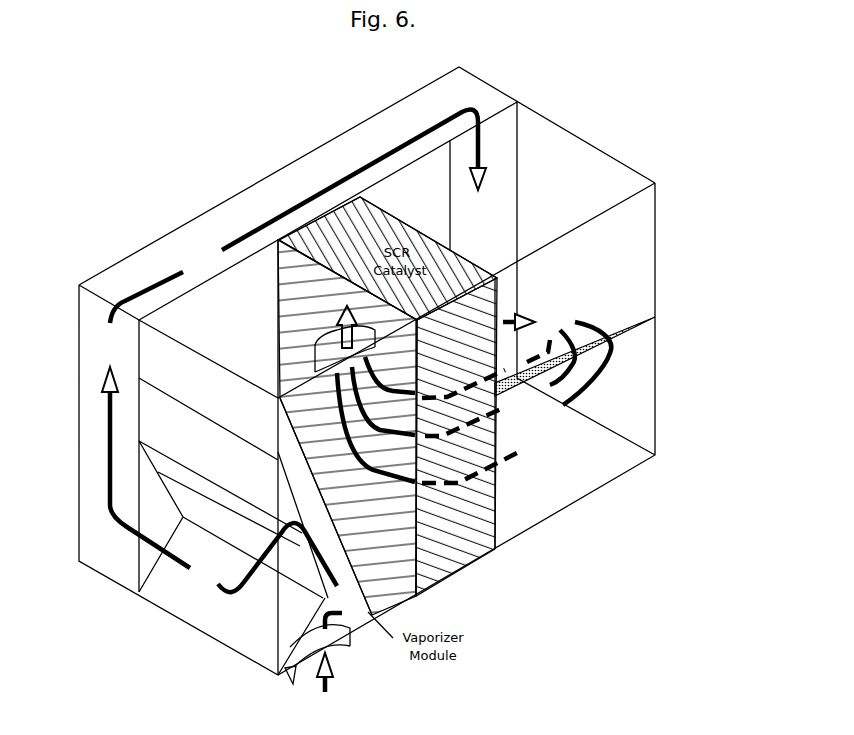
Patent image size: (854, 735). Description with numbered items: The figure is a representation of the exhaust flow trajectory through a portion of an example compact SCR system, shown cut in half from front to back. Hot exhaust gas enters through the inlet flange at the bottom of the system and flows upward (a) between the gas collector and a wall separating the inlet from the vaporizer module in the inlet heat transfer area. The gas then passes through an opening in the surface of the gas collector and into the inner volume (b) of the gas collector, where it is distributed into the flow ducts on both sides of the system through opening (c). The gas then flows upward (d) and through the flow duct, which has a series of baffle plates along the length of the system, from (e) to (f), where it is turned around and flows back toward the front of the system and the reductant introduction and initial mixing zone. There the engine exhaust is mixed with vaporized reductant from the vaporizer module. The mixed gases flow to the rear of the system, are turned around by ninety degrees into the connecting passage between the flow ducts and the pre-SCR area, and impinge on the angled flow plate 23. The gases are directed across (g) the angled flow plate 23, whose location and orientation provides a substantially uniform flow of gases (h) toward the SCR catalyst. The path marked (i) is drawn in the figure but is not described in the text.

The angled flow plate 23 is at (655, 317).
The upward gas flow a is at (283, 607).
The inner volume of the gas collector b is at (162, 487).
The opening c is at (106, 449).
The upward flow d is at (140, 312).
The flow duct start e is at (336, 188).
The flow duct end f is at (475, 141).
The flow across the angled flow plate g is at (557, 359).
The uniform flow of gases h is at (486, 411).
The flow step i is at (376, 419).